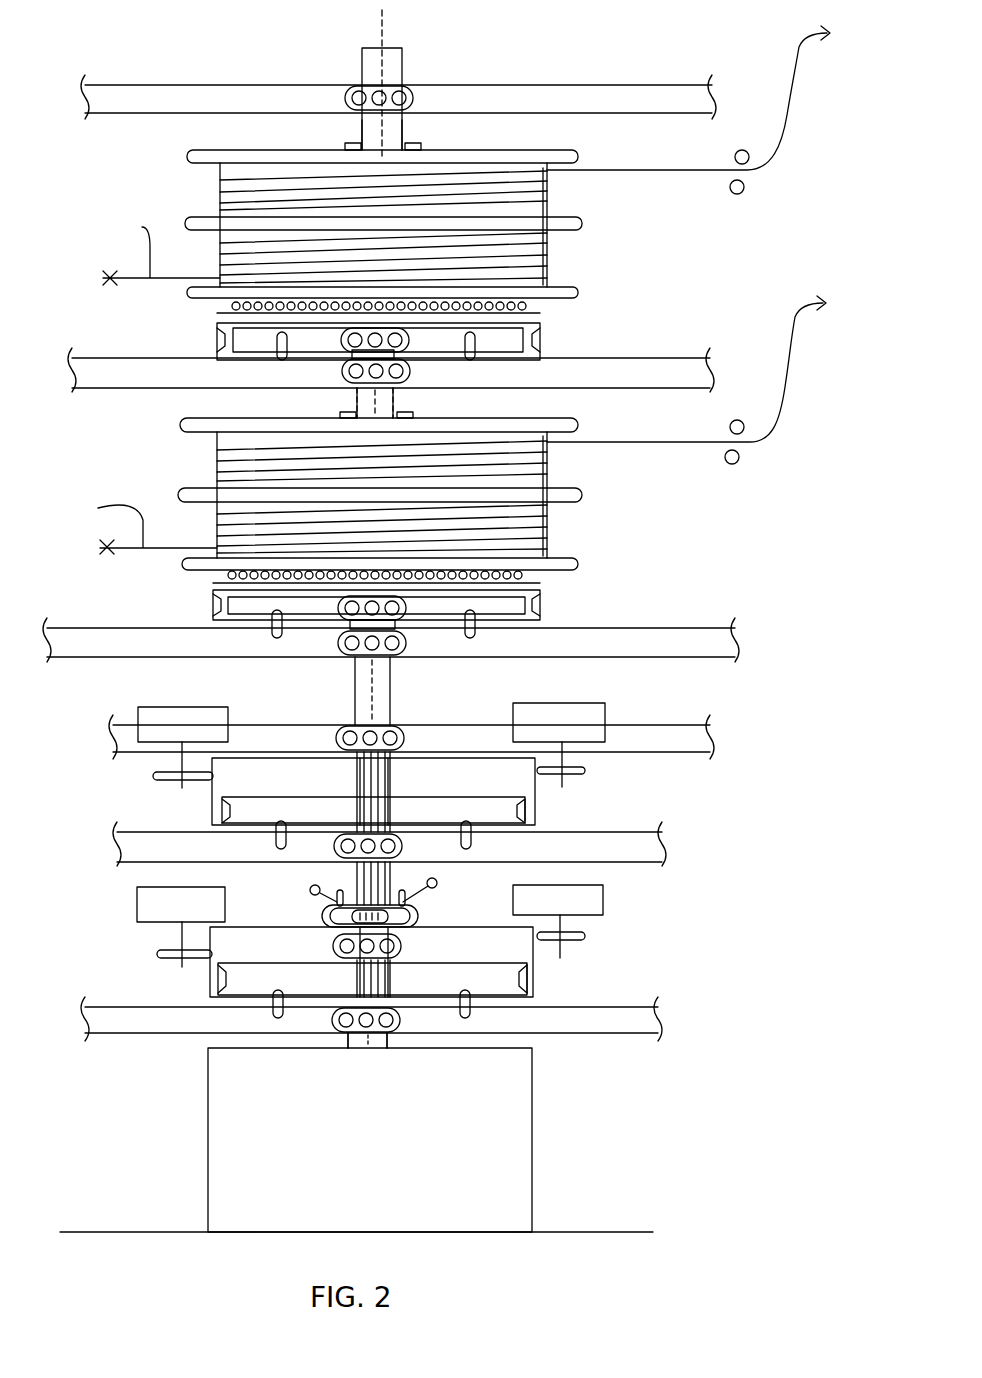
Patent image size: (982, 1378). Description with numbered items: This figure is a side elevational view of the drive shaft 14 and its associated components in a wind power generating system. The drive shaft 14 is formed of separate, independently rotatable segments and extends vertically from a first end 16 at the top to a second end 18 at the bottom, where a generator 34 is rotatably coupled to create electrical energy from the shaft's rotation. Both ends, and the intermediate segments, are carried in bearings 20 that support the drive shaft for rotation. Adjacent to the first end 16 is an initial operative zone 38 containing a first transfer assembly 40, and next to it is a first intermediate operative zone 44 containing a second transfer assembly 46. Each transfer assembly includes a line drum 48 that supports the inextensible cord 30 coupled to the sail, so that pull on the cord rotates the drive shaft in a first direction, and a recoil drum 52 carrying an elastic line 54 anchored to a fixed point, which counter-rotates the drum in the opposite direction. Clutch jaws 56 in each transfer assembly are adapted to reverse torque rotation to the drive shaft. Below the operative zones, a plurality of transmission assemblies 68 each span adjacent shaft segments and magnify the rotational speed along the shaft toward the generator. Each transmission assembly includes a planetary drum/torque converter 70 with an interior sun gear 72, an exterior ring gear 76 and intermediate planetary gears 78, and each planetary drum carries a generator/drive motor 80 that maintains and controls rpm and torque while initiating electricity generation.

The drive shaft 14 is at (362, 67).
The first end 16 is at (385, 47).
The second end 18 is at (385, 1037).
The bearings 20 is at (407, 82).
The inextensible cord 30 is at (790, 125).
The generator 34 is at (389, 1167).
The initial operative zone 38 is at (218, 315).
The first transfer assembly 40 is at (218, 203).
The first intermediate operative zone 44 is at (213, 592).
The second transfer assembly 46 is at (215, 463).
The line drum 48 is at (545, 190).
The recoil drum 52 is at (543, 252).
The elastic line 54 is at (137, 384).
The clutch jaws 56 is at (423, 143).
The transmission assemblies 68 is at (212, 792).
The planetary drum/torque converter 70 is at (322, 917).
The interior sun gear 72 is at (397, 813).
The exterior ring gear 76 is at (528, 815).
The intermediate planetary gears 78 is at (212, 822).
The generator/drive motor 80 is at (583, 703).